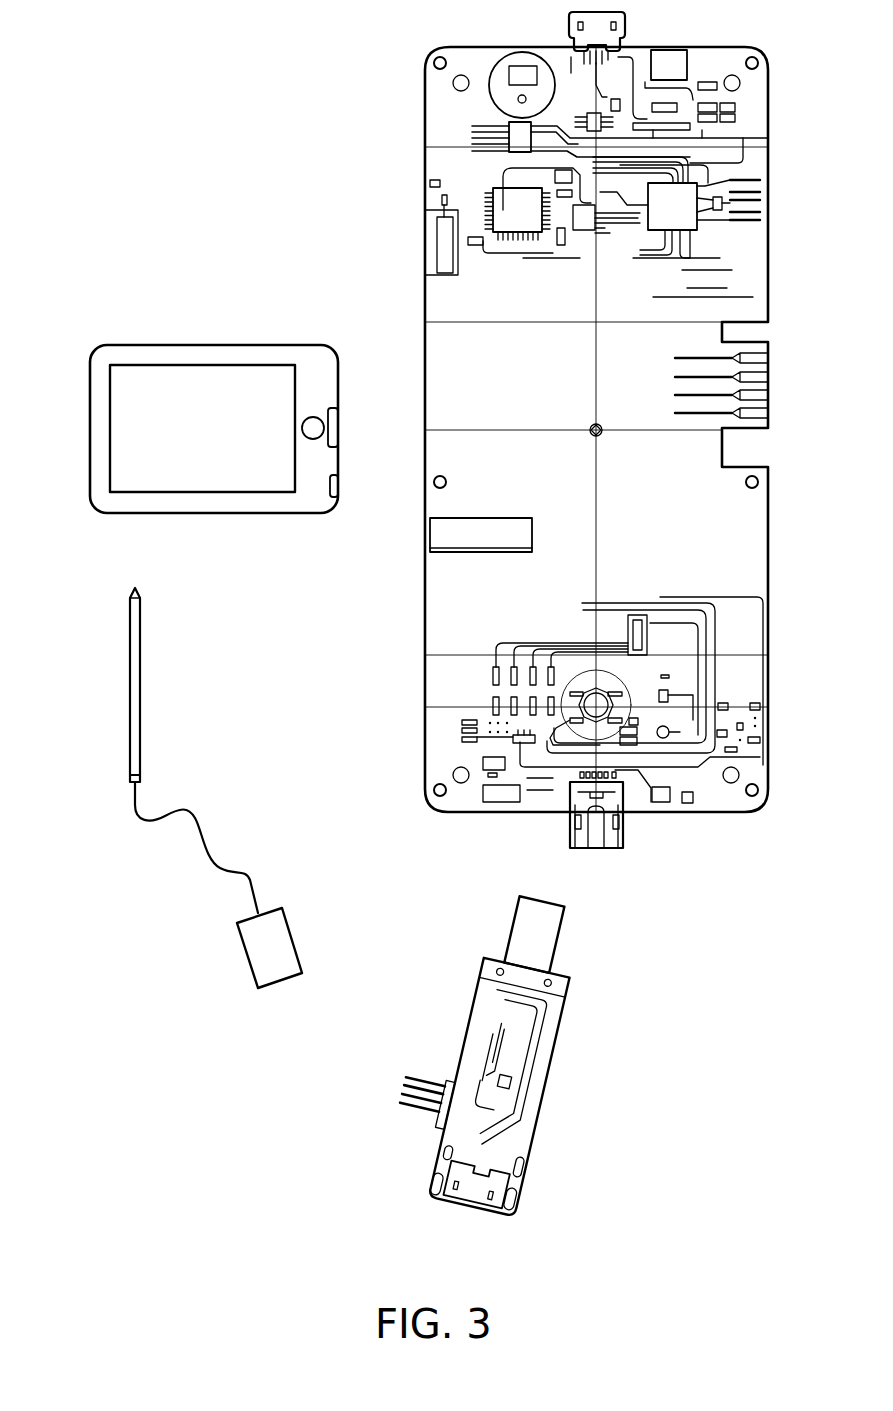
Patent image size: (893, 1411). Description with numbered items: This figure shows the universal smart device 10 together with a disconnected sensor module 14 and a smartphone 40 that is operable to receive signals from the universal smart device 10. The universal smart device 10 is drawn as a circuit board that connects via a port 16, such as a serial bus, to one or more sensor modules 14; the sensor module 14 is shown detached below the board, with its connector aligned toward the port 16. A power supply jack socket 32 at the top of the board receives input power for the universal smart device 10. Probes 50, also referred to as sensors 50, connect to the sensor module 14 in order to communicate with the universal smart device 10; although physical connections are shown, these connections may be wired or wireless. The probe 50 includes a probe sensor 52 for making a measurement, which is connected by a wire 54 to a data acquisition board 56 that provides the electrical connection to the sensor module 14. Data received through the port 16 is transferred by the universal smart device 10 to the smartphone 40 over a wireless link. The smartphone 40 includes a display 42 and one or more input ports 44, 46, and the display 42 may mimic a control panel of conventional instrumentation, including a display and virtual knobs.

The universal smart device 10 is at (808, 376).
The sensor module 14 is at (449, 996).
The port 16 is at (636, 843).
The power supply jack socket 32 is at (627, 24).
The smartphone 40 is at (197, 298).
The display 42 is at (127, 403).
The input port 44 is at (338, 432).
The input port 46 is at (339, 490).
The probe 50 is at (185, 620).
The probe sensor 52 is at (128, 696).
The wire 54 is at (197, 843).
The data acquisition board 56 is at (297, 942).